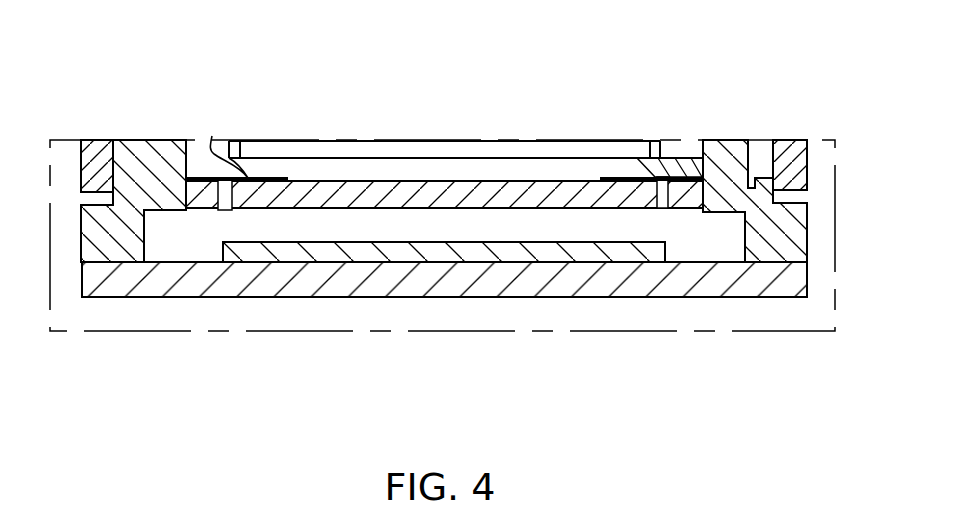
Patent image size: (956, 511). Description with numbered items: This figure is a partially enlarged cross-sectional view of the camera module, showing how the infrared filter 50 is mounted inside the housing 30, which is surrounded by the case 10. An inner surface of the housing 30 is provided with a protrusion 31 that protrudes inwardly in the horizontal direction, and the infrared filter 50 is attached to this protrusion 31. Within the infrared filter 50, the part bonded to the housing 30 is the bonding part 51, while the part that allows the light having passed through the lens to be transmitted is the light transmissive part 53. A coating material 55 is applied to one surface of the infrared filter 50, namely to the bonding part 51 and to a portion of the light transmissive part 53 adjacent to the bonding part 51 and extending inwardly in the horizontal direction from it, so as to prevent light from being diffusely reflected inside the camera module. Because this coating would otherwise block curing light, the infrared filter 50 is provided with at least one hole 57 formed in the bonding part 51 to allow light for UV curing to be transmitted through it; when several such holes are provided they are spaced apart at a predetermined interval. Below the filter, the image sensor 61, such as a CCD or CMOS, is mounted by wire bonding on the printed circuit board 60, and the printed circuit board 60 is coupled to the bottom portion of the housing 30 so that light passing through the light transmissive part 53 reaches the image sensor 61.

The case 10 is at (105, 157).
The housing 30 is at (150, 186).
The protrusion 31 is at (212, 137).
The infrared filter 50 is at (602, 40).
The bonding part 51 is at (630, 177).
The light transmissive part 53 is at (507, 195).
The coating material 55 is at (203, 183).
The hole 57 is at (232, 193).
The printed circuit board 60 is at (467, 273).
The image sensor 61 is at (362, 253).